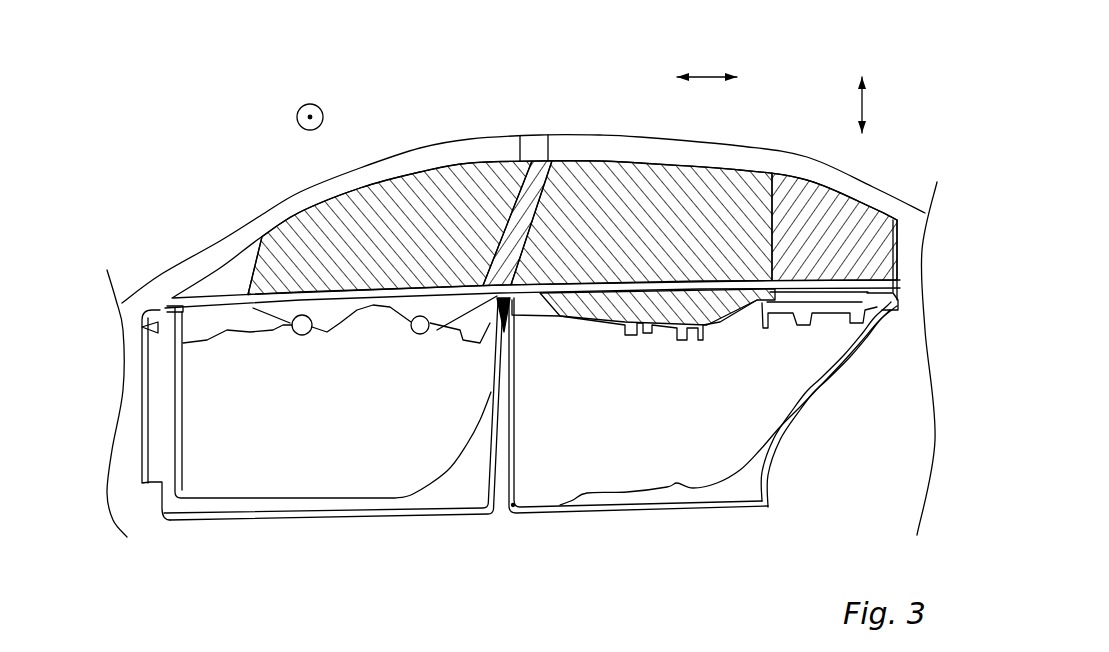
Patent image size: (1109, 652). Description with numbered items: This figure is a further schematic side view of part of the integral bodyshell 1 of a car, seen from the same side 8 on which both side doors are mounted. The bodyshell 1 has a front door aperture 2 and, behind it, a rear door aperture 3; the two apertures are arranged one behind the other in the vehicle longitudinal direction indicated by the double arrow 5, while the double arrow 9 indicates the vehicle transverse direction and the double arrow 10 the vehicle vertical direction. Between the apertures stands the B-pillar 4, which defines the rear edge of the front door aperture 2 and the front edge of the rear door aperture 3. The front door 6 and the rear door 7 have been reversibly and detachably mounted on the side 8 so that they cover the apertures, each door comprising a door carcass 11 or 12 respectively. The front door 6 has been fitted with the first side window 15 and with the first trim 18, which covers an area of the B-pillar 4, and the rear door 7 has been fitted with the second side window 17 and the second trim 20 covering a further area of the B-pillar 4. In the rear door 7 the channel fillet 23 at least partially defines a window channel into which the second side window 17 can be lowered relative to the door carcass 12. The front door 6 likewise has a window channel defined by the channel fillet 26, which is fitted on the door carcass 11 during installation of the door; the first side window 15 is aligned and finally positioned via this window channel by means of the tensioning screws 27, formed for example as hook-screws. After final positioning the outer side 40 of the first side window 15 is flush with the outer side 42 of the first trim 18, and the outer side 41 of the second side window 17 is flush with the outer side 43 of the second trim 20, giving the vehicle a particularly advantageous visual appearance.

The integral bodyshell 1 is at (759, 140).
The front door aperture 2 is at (271, 214).
The rear door aperture 3 is at (796, 174).
The B-pillar 4 is at (535, 152).
The double arrow 5 is at (707, 75).
The front door 6 is at (421, 523).
The rear door 7 is at (614, 518).
The side 8 is at (181, 282).
The double arrow 9 is at (297, 117).
The double arrow 10 is at (865, 105).
The door carcass 11 is at (366, 521).
The door carcass 12 is at (797, 447).
The first side window 15 is at (402, 204).
The second side window 17 is at (660, 188).
The first trim 18 is at (510, 182).
The second trim 20 is at (543, 190).
The channel fillet 23 is at (790, 268).
The channel fillet 26 is at (228, 300).
The tensioning screws 27 is at (302, 335).
The outer side 40 is at (337, 226).
The outer side 41 is at (640, 184).
The outer side 42 is at (492, 262).
The outer side 43 is at (525, 267).